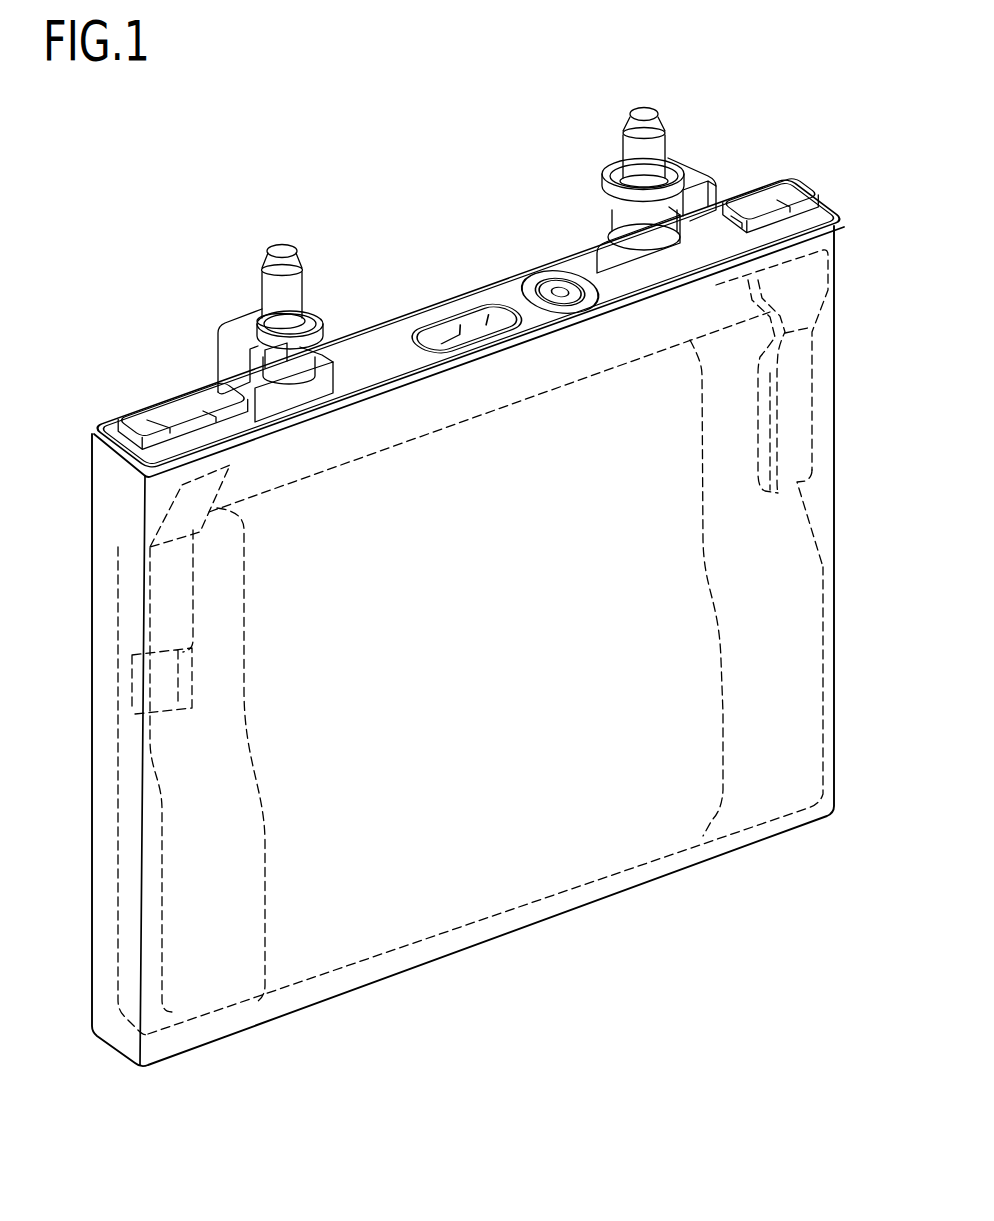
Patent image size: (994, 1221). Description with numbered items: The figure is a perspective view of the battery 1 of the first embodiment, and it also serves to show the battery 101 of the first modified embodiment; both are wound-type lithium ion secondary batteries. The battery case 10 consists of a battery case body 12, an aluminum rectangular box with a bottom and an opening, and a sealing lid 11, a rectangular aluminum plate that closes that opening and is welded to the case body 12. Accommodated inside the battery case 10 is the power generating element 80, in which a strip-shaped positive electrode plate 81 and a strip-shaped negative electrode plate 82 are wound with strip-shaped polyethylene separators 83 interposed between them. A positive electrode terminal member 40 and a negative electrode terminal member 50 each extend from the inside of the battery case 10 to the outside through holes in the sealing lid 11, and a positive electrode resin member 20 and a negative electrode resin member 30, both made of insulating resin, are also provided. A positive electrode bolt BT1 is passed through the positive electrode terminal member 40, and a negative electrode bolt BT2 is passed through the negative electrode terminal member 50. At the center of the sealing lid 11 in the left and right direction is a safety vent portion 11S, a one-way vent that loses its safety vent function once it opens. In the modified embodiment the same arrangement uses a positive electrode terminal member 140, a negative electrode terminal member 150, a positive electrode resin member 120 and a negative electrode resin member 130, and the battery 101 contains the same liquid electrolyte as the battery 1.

The battery 1 is at (449, 575).
The battery 101 is at (421, 197).
The battery case 10 is at (150, 317).
The sealing lid 11 is at (112, 428).
The battery case body 12 is at (103, 484).
The safety vent portion 11S is at (466, 324).
The positive electrode resin member 20 is at (678, 260).
The positive electrode resin member 120 is at (687, 262).
The negative electrode resin member 30 is at (309, 374).
The negative electrode resin member 130 is at (273, 403).
The positive electrode terminal member 40 is at (771, 179).
The positive electrode terminal member 140 is at (757, 200).
The negative electrode terminal member 50 is at (183, 360).
The negative electrode terminal member 150 is at (187, 412).
The positive electrode bolt BT1 is at (660, 145).
The negative electrode bolt BT2 is at (268, 277).
The power generating element 80 is at (760, 975).
The positive electrode plate 81 is at (745, 800).
The negative electrode plate 82 is at (253, 897).
The separators 83 is at (597, 852).